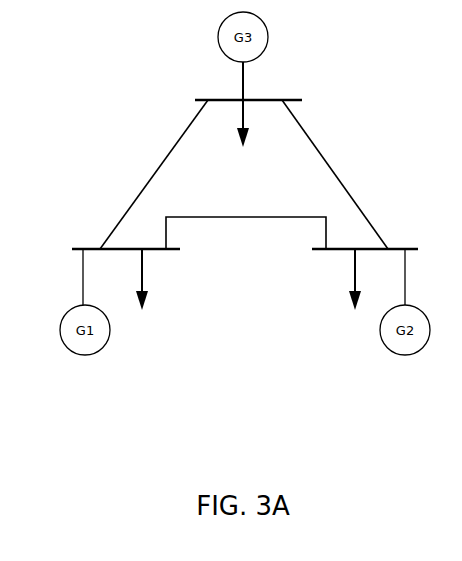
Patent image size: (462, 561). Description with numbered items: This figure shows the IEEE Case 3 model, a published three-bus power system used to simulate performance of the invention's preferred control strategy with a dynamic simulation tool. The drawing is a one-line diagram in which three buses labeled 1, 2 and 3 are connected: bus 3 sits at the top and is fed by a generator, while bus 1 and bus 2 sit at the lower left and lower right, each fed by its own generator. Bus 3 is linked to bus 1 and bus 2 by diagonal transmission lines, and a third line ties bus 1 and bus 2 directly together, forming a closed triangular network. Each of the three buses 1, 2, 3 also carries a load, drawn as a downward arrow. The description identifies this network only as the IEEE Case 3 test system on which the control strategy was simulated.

The bus 1 is at (126, 264).
The bus 2 is at (365, 264).
The bus 3 is at (248, 104).